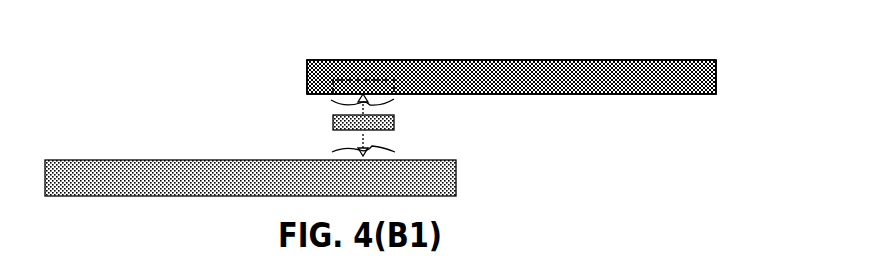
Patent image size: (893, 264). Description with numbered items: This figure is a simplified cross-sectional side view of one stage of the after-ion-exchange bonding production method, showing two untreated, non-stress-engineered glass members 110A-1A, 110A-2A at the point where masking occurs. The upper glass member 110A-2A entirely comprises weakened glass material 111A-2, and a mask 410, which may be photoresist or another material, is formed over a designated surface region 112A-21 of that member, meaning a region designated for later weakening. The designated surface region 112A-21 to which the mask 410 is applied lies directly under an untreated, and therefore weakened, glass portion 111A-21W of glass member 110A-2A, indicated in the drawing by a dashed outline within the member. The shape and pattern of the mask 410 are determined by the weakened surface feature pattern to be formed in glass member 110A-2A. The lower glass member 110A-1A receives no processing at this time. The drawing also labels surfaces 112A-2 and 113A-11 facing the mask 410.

The untreated glass member 110A-1A is at (87, 152).
The untreated glass member 110A-2A is at (299, 76).
The mask 410 is at (333, 120).
The weakened glass portion 111A-21W is at (369, 87).
The weakened glass material 111A-2 is at (635, 72).
The designated surface region 112A-21 is at (370, 105).
The second gap 113A-11 is at (372, 146).
The second adhesive layer 112A-2 is at (623, 103).